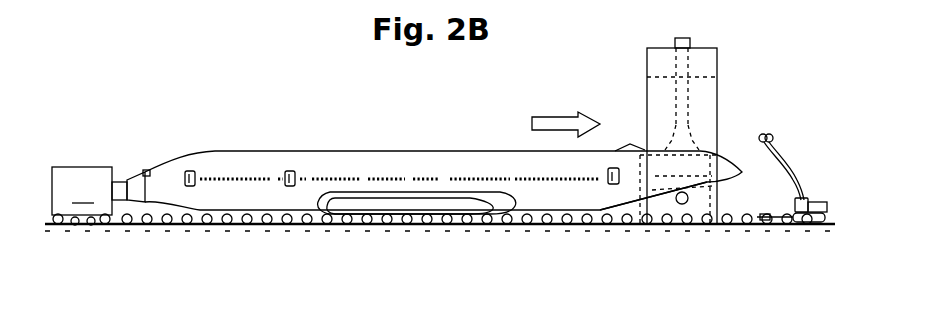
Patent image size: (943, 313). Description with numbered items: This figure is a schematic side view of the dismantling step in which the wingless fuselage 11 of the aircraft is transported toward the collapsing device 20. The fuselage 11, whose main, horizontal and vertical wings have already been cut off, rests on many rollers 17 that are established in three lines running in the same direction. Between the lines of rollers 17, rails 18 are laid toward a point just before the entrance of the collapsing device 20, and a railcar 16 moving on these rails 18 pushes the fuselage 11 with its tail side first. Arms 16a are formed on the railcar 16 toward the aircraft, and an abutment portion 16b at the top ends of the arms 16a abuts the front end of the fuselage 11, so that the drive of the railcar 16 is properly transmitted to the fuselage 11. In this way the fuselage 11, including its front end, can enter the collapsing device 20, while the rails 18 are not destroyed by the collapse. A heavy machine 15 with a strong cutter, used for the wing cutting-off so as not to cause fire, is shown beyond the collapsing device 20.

The fuselage 11 is at (442, 157).
The heavy machine 15 is at (763, 217).
The railcar 16 is at (82, 196).
The arms 16a is at (139, 246).
The abutment portion 16b is at (163, 151).
The rollers 17 is at (440, 264).
The rails 18 is at (467, 259).
The collapsing device 20 is at (730, 72).